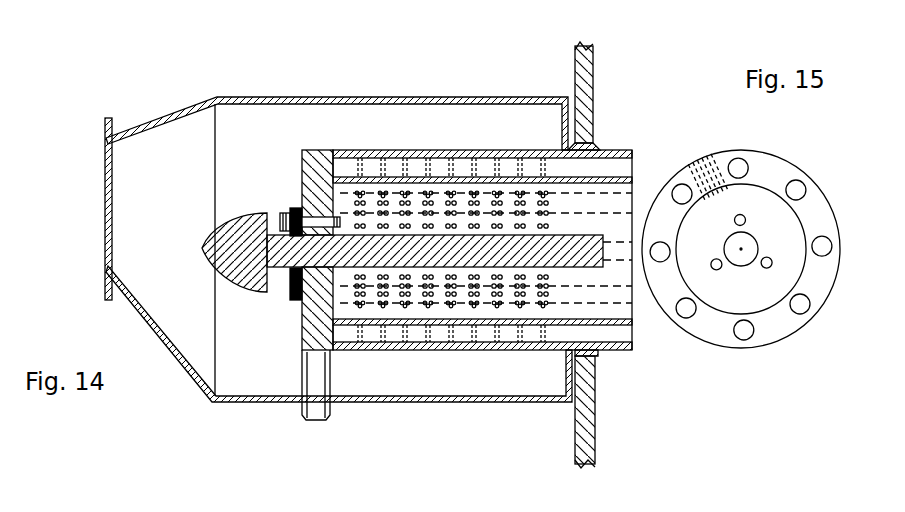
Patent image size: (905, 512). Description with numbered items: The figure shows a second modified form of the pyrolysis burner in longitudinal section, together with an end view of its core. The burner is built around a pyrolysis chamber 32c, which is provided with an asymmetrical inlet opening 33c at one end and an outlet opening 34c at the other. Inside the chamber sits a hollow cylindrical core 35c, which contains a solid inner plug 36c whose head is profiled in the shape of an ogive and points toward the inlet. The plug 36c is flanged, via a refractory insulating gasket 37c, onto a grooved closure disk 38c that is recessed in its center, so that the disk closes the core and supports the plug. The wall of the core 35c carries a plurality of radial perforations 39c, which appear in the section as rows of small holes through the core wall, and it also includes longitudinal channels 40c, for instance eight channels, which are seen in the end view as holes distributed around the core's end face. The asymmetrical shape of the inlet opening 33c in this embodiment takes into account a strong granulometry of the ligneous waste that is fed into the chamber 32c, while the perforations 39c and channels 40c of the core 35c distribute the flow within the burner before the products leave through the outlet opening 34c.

In FIG. 14, the pyrolysis chamber 32c is at (441, 97).
In FIG. 14, the asymmetrical inlet opening 33c is at (117, 182).
In FIG. 14, the outlet opening 34c is at (601, 145).
In FIG. 14, the hollow cylindrical core 35c is at (504, 148).
In FIG. 15, the hollow cylindrical core 35c is at (756, 155).
In FIG. 14, the solid inner plug 36c is at (247, 290).
In FIG. 15, the solid inner plug 36c is at (737, 255).
In FIG. 14, the refractory insulating gasket 37c is at (286, 210).
In FIG. 14, the grooved closure disk 38c is at (323, 150).
In FIG. 14, the radial perforations 39c is at (470, 300).
In FIG. 15, the radial perforations 39c is at (722, 150).
In FIG. 15, the longitudinal channels 40c is at (676, 192).